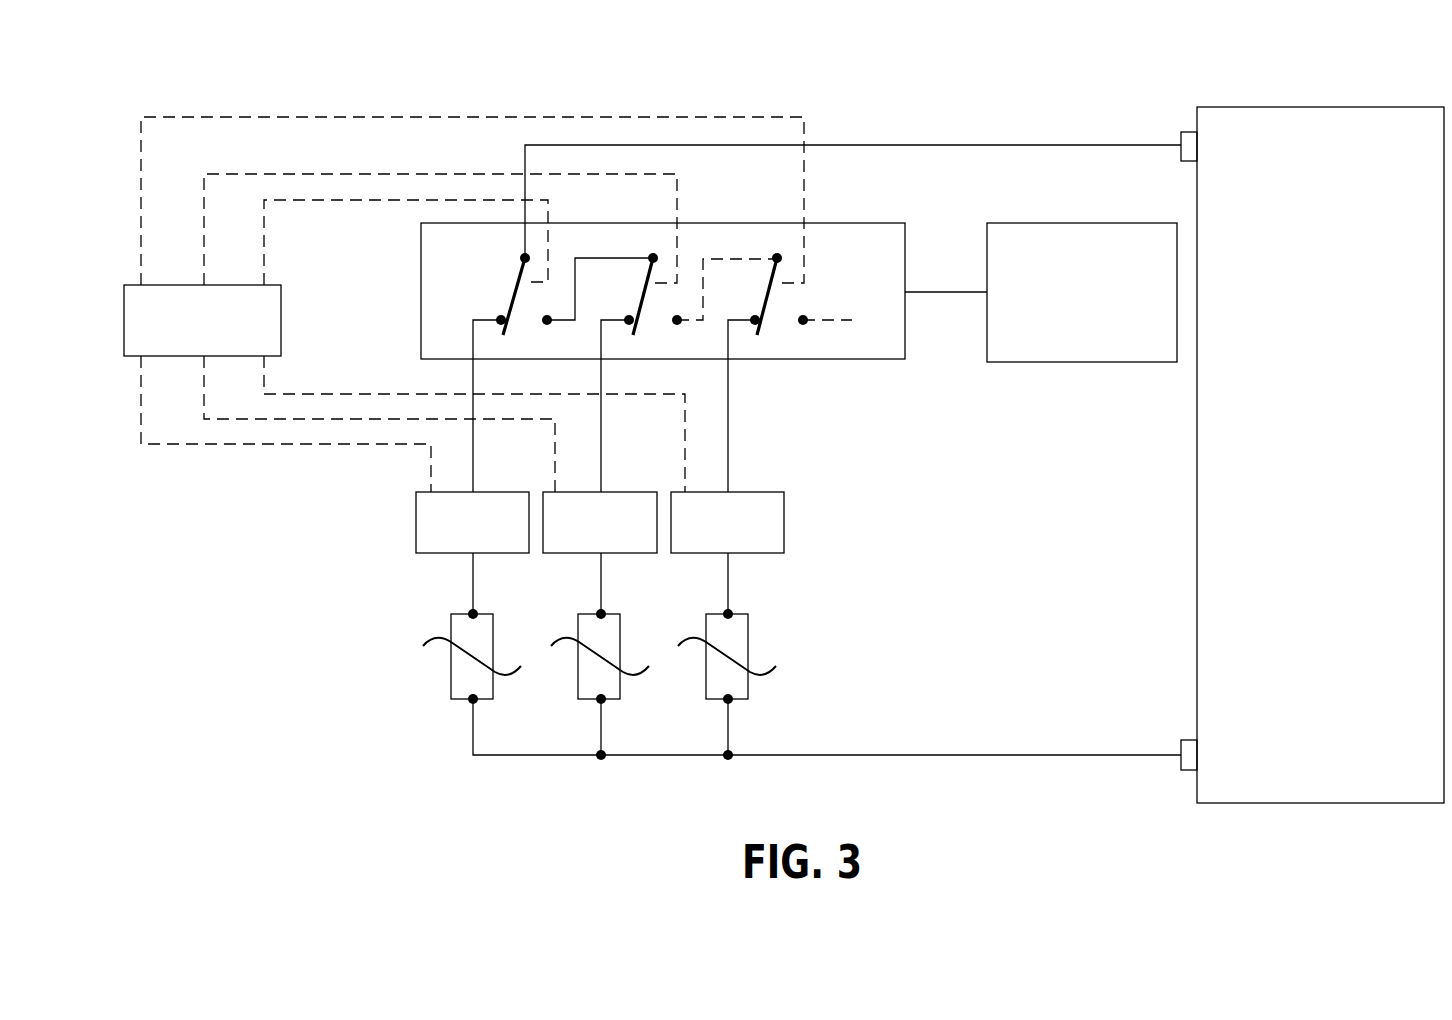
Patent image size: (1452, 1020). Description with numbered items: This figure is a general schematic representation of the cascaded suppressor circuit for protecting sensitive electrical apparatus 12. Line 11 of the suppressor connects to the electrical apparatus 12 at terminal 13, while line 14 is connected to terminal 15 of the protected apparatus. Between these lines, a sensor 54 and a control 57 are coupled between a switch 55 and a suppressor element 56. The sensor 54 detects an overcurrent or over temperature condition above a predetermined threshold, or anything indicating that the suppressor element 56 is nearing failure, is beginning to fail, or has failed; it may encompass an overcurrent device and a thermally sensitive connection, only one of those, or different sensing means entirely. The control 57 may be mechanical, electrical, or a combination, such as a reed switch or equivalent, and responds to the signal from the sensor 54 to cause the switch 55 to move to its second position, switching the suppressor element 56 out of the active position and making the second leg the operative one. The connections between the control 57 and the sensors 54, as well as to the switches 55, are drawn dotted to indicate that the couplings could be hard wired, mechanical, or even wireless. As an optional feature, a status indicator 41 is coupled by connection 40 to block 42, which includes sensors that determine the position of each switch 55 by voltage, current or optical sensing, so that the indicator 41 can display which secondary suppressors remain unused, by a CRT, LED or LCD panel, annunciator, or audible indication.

The line 11 is at (869, 145).
The electrical apparatus 12 is at (1288, 107).
The terminal 13 is at (1187, 132).
The line 14 is at (1033, 757).
The terminal 15 is at (1183, 740).
The connection 40 is at (942, 293).
The status indicator 41 is at (1043, 362).
The block 42 is at (853, 360).
The sensor 54 is at (416, 525).
The switch 55 is at (510, 305).
The suppressor element 56 is at (451, 678).
The control 57 is at (281, 318).